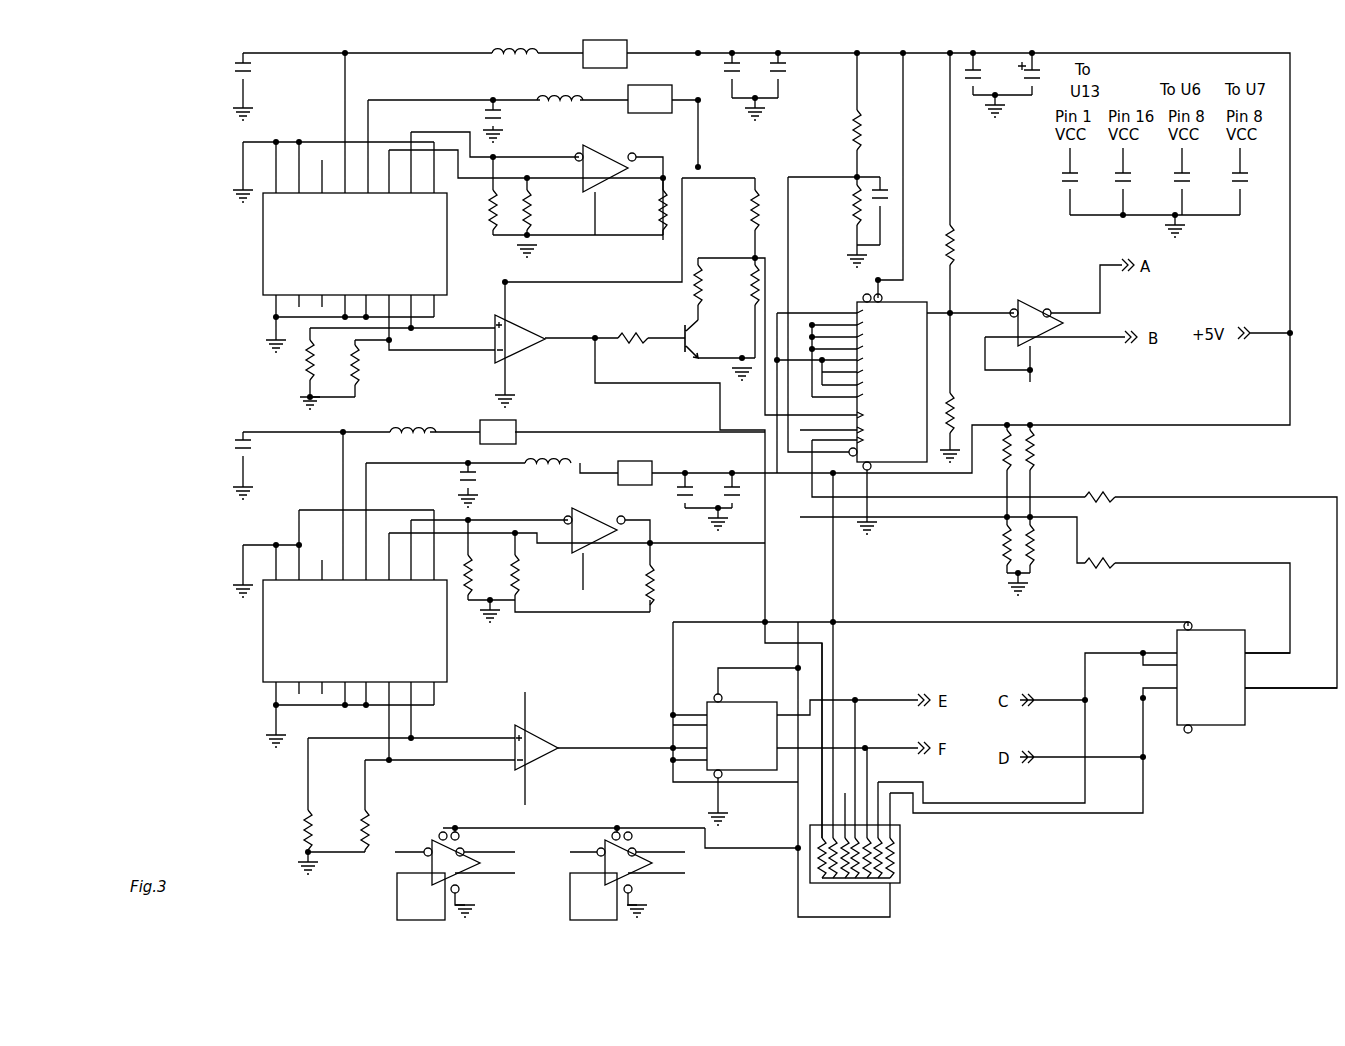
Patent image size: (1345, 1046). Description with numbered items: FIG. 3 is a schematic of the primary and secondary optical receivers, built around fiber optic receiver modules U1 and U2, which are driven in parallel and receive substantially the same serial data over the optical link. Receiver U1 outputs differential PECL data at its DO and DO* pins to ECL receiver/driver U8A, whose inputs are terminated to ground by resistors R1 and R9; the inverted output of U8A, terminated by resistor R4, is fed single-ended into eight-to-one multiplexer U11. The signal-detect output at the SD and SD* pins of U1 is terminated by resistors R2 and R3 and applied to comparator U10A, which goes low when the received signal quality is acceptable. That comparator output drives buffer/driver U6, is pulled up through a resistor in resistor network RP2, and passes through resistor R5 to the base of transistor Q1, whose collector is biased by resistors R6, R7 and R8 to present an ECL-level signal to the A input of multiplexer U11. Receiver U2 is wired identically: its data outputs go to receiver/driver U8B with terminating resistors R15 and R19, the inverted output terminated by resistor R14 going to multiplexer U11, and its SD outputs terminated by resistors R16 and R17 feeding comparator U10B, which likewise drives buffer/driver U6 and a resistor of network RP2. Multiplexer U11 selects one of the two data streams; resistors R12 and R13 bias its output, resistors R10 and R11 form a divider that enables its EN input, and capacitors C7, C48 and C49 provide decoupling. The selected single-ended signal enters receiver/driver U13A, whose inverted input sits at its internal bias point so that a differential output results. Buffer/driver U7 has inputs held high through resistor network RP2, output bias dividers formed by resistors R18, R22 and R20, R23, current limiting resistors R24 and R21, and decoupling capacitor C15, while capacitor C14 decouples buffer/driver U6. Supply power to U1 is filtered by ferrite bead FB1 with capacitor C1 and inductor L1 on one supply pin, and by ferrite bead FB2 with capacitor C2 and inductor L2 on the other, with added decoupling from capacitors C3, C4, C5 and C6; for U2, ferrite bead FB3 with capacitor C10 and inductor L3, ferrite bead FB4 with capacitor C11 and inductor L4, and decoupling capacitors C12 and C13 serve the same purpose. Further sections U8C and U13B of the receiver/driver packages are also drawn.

The capacitor C1 is at (256, 80).
The inductor L1 is at (515, 65).
The inductor L2 is at (560, 85).
The ferrite bead FB1 is at (605, 54).
The ferrite bead FB2 is at (650, 99).
The capacitor C2 is at (508, 115).
The ECL receiver/driver U8A is at (605, 176).
The terminating resistor R9 is at (481, 196).
The terminating resistor R1 is at (517, 206).
The terminating resistor R4 is at (652, 206).
The resistor R7 is at (741, 218).
The decoupling capacitor C3 is at (741, 79).
The decoupling capacitor C4 is at (788, 79).
The resistor R10 is at (839, 130).
The resistor R11 is at (843, 205).
The decoupling capacitor C7 is at (888, 218).
The resistor R12 is at (965, 239).
The resistor R13 is at (972, 410).
The decoupling capacitor C5 is at (985, 67).
The decoupling capacitor C6 is at (1039, 67).
The decoupling capacitor C48 is at (1084, 189).
The decoupling capacitor C49 is at (1137, 189).
The decoupling capacitor C14 is at (1196, 189).
The decoupling capacitor C15 is at (1254, 189).
The optical receiver U1 is at (369, 244).
The terminating resistor R2 is at (323, 359).
The terminating resistor R3 is at (368, 365).
The comparator U10A is at (531, 326).
The resistor R5 is at (633, 349).
The resistor R6 is at (683, 289).
The resistor R8 is at (740, 308).
The transistor Q1 is at (705, 337).
The multiplexer U11 is at (878, 375).
The receiver/driver U13A is at (1036, 310).
The resistor R18 is at (991, 450).
The resistor R20 is at (1047, 450).
The resistor R22 is at (988, 545).
The resistor R23 is at (1047, 545).
The current limiting resistor R21 is at (1101, 479).
The current limiting resistor R24 is at (1101, 552).
The capacitor C10 is at (263, 447).
The inductor L3 is at (410, 415).
The ferrite bead FB3 is at (486, 421).
The inductor L4 is at (548, 447).
The ferrite bead FB4 is at (634, 463).
The capacitor C11 is at (489, 475).
The decoupling capacitor C12 is at (672, 503).
The decoupling capacitor C13 is at (724, 466).
The ECL receiver/driver U8B is at (594, 516).
The terminating resistor R19 is at (484, 575).
The terminating resistor R15 is at (531, 575).
The terminating resistor R14 is at (666, 585).
The optical receiver U2 is at (376, 631).
The comparator U10B is at (549, 732).
The terminating resistor R17 is at (325, 823).
The terminating resistor R16 is at (382, 823).
The buffer/driver U6 is at (742, 730).
The buffer/driver U7 is at (1211, 672).
The resistor network RP2 is at (872, 854).
The buffer/inverter U8C is at (421, 874).
The buffer/inverter U13B is at (590, 874).